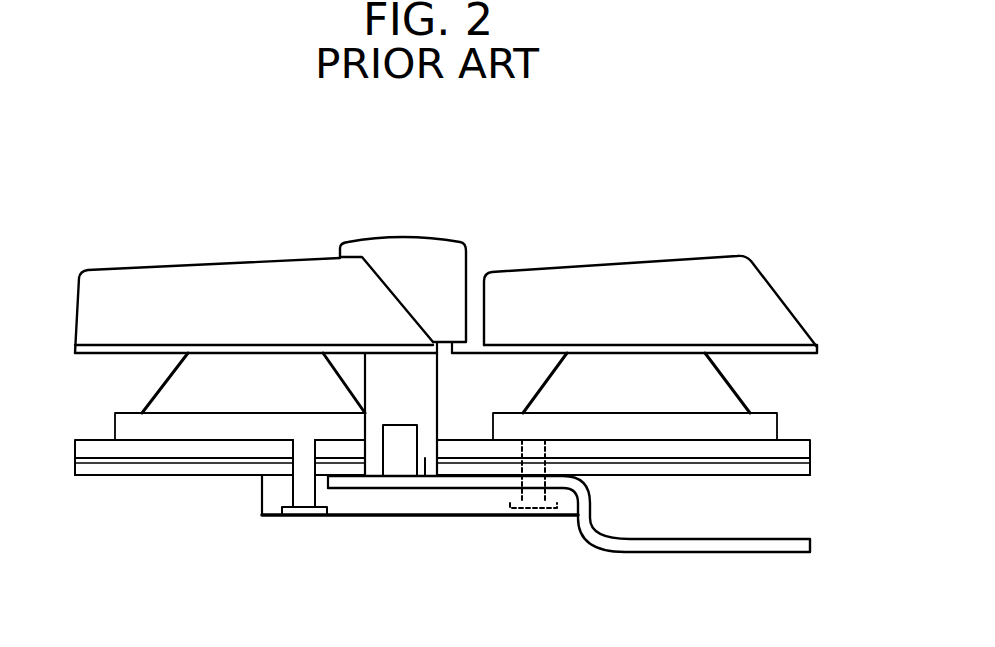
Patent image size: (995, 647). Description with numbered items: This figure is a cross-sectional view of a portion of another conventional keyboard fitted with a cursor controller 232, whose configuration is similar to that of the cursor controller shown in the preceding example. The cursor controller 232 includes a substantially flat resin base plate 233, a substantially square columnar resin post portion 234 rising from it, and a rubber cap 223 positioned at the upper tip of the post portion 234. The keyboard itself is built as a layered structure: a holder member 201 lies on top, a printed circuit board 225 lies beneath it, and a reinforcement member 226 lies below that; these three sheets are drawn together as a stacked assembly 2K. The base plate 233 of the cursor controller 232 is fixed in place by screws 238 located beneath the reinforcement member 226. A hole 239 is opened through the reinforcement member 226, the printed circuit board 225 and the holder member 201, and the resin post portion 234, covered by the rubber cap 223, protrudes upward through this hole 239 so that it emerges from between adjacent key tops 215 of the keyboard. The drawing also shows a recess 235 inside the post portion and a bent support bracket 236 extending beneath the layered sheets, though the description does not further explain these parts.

The key tops 215 is at (165, 283).
The rubber cap 223 is at (402, 248).
The cursor controller 232 is at (447, 414).
The holder member 201 is at (812, 450).
The printed circuit board 225 is at (812, 461).
The reinforcement member 226 is at (473, 497).
The membrane switch sheet assembly 2K is at (498, 471).
The screws 238 is at (303, 493).
The hole 239 is at (360, 458).
The base plate 233 is at (389, 503).
The stem recess 235 is at (403, 458).
The post portion 234 is at (425, 463).
The support bracket 236 is at (687, 545).